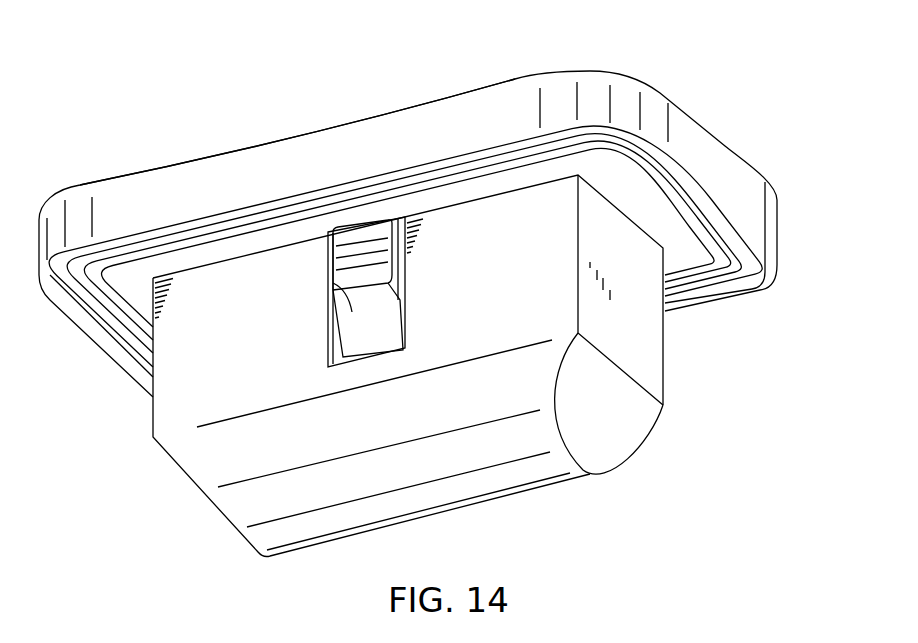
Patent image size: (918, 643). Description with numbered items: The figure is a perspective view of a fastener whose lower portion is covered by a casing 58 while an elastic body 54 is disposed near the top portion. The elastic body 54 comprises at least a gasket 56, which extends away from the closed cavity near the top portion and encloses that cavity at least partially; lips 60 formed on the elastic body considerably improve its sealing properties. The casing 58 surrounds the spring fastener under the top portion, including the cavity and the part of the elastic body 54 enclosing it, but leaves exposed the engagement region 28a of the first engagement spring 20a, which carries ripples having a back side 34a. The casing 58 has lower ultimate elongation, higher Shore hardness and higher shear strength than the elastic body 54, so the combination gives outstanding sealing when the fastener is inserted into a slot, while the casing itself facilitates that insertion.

The elastic body 54 is at (163, 192).
The gasket 56 is at (477, 105).
The casing 58 is at (200, 400).
The lips 60 is at (710, 277).
The first engagement spring 20a is at (378, 327).
The first engagement region 28a is at (342, 270).
The back side 34a is at (340, 308).